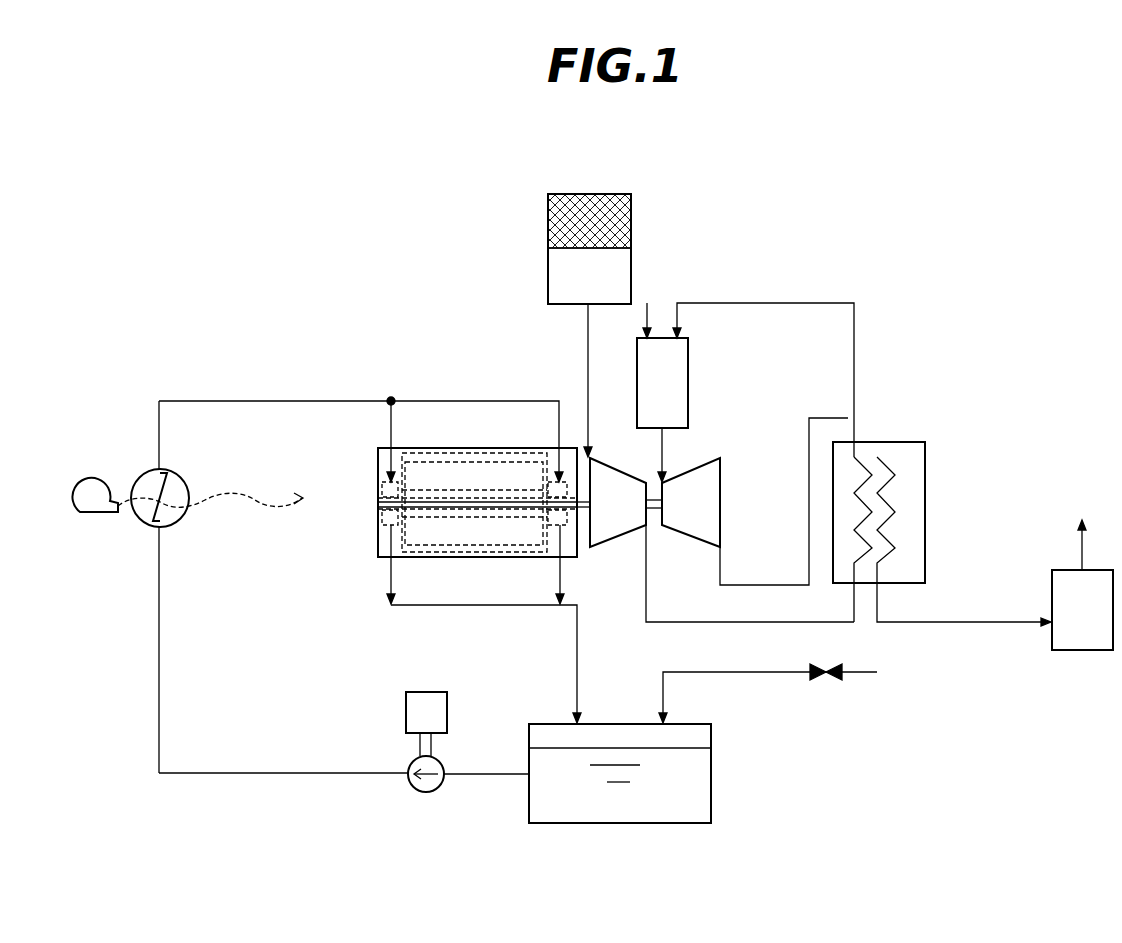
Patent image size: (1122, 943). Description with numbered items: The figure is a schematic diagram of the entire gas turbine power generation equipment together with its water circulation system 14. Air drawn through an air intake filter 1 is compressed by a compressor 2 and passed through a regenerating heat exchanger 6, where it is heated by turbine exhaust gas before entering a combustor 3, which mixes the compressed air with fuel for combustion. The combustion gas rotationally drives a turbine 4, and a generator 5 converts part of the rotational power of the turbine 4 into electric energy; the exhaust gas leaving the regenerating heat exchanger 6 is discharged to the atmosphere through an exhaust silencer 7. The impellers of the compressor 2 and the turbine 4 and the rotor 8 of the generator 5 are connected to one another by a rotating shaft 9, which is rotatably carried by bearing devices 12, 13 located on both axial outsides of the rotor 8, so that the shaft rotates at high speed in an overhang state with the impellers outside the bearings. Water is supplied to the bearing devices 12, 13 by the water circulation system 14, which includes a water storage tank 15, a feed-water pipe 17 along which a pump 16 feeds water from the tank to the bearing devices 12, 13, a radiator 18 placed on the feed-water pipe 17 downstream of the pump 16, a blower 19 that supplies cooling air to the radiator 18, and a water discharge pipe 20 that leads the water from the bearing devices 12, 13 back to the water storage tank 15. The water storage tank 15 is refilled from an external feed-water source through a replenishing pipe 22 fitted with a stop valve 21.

The air intake filter 1 is at (546, 222).
The compressor 2 is at (610, 520).
The combustor 3 is at (672, 397).
The turbine 4 is at (701, 520).
The generator 5 is at (505, 438).
The regenerating heat exchanger 6 is at (927, 497).
The exhaust silencer 7 is at (1092, 624).
The rotor 8 is at (455, 490).
The rotating shaft 9 is at (468, 528).
The bearing device 12 is at (380, 518).
The bearing device 13 is at (573, 520).
The water circulation system 14 is at (232, 392).
The water storage tank 15 is at (712, 792).
The pump 16 is at (432, 692).
The feed-water pipe 17 is at (159, 680).
The radiator 18 is at (143, 522).
The blower 19 is at (90, 518).
The water discharge pipe 20 is at (575, 655).
The stop valve 21 is at (825, 681).
The replenishing pipe 22 is at (750, 673).